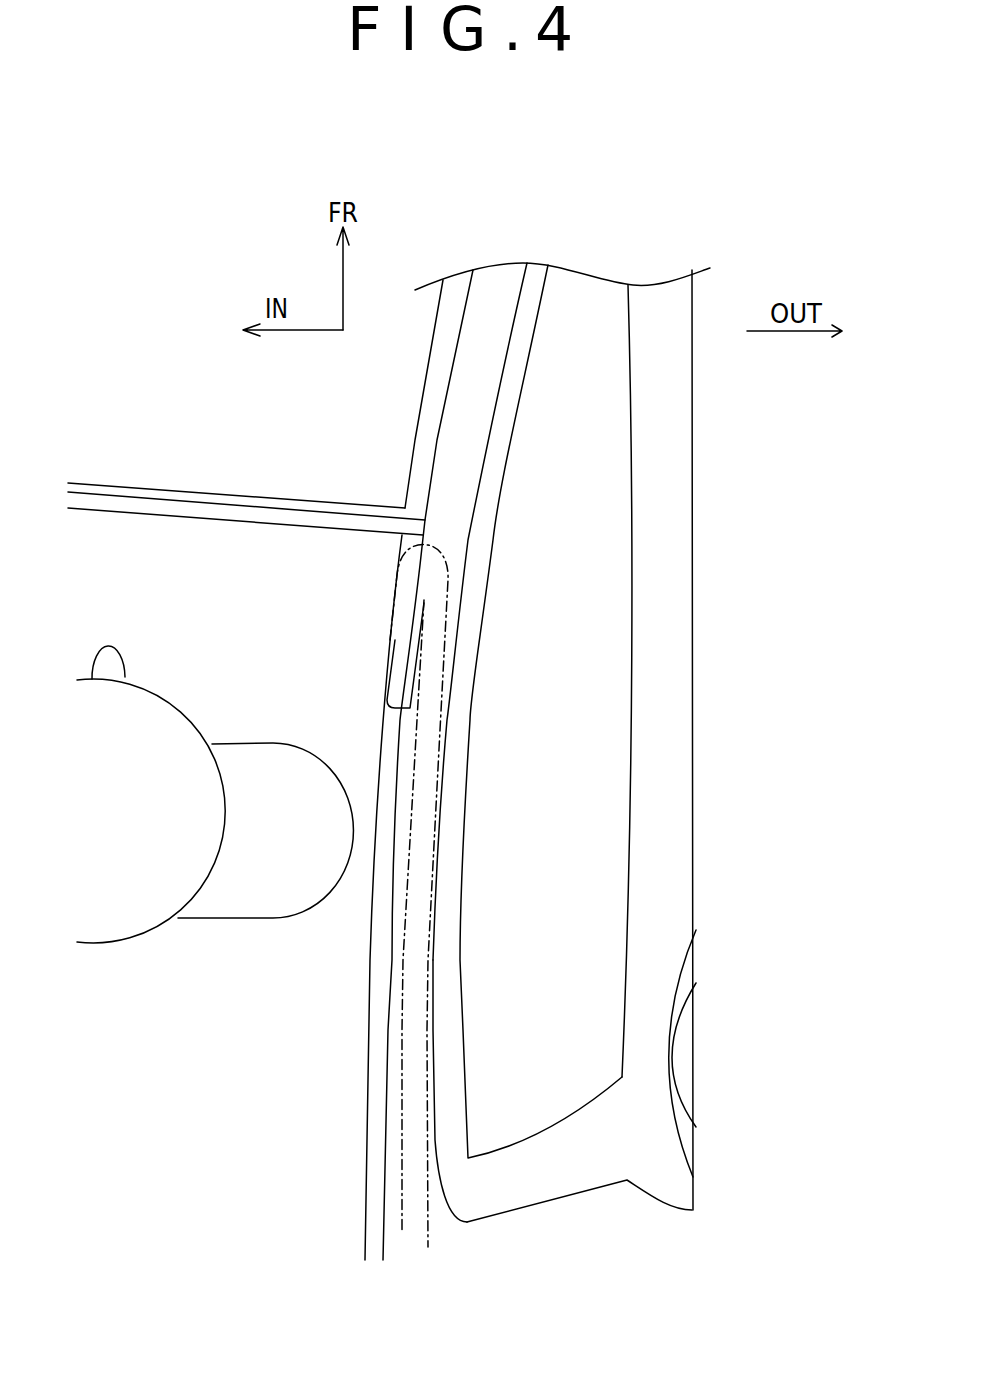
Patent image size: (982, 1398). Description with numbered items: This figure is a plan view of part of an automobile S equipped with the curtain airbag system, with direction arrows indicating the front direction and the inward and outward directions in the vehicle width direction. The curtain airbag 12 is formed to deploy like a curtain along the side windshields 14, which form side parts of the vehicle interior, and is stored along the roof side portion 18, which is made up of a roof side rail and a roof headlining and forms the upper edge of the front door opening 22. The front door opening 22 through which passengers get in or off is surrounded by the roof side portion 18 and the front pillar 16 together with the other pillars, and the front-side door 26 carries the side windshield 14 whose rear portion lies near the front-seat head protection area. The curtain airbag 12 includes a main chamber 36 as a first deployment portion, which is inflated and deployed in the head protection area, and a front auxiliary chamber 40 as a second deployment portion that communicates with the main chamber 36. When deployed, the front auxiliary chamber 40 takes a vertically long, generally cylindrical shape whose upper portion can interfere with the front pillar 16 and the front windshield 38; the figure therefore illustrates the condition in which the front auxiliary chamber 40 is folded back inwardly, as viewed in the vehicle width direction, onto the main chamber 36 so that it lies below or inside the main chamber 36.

The curtain airbag 12 is at (398, 911).
The side windshield 14 is at (603, 555).
The front pillar 16 is at (468, 447).
The roof side portion 18 is at (433, 1010).
The front door opening 22 is at (441, 1080).
The front-side door 26 is at (680, 687).
The main chamber 36 is at (415, 980).
The front windshield 38 is at (300, 463).
The front auxiliary chamber 40 is at (398, 662).
The automobile S is at (713, 622).